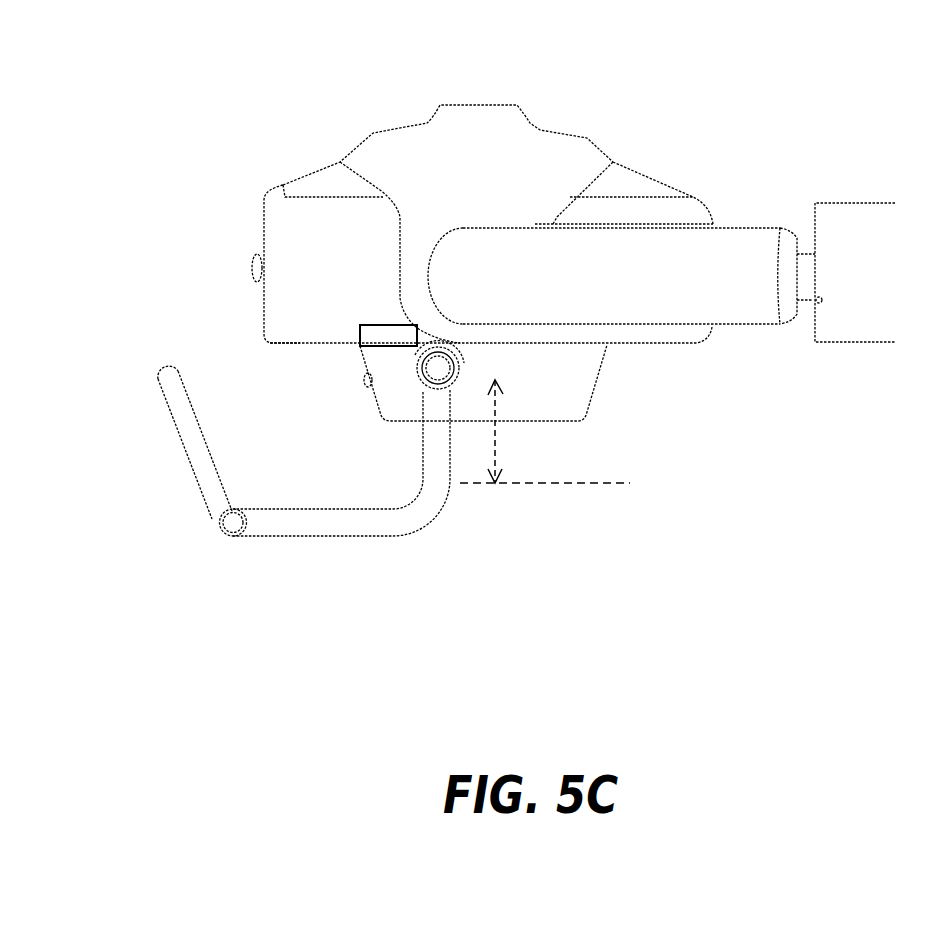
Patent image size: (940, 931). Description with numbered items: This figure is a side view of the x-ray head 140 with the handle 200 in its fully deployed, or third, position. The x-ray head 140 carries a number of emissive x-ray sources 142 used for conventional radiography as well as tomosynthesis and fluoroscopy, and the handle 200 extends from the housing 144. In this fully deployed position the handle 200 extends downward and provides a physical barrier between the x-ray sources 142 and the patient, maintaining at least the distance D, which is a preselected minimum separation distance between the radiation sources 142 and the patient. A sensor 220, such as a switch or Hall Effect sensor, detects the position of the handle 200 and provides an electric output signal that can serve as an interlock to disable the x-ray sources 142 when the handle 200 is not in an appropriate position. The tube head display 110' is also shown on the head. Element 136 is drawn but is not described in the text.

The tube head display 110' is at (164, 405).
The controller 136 is at (905, 203).
The x-ray head 140 is at (600, 387).
The emissive x-ray sources 142 is at (488, 377).
The housing 144 is at (262, 323).
The handle 200 is at (367, 537).
The sensor 220 is at (382, 325).
The distance D is at (500, 438).